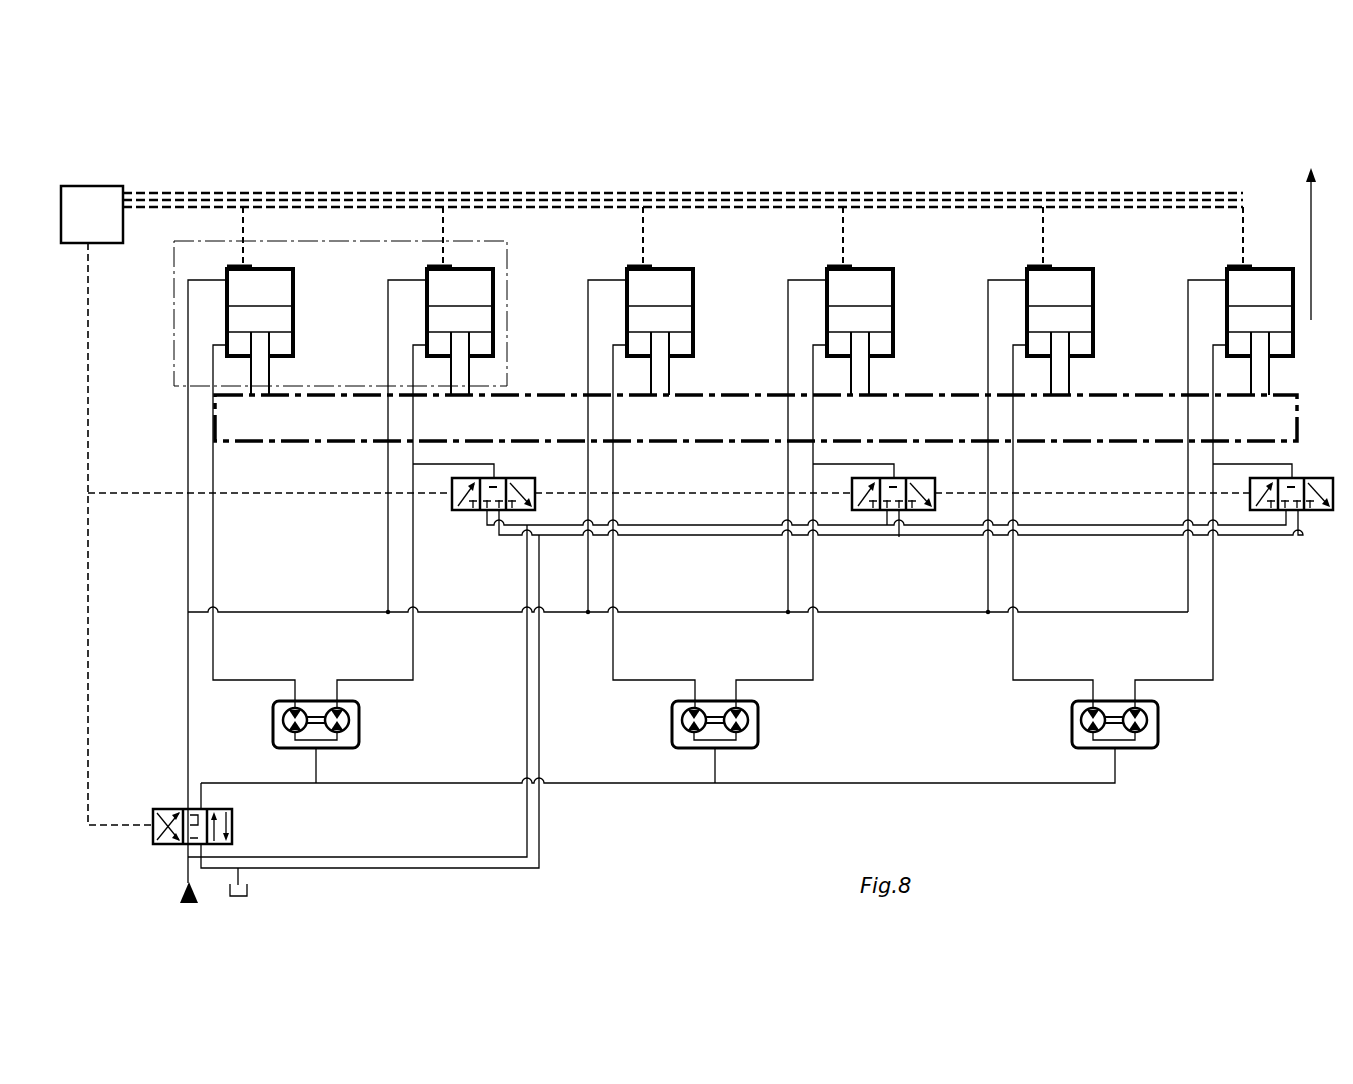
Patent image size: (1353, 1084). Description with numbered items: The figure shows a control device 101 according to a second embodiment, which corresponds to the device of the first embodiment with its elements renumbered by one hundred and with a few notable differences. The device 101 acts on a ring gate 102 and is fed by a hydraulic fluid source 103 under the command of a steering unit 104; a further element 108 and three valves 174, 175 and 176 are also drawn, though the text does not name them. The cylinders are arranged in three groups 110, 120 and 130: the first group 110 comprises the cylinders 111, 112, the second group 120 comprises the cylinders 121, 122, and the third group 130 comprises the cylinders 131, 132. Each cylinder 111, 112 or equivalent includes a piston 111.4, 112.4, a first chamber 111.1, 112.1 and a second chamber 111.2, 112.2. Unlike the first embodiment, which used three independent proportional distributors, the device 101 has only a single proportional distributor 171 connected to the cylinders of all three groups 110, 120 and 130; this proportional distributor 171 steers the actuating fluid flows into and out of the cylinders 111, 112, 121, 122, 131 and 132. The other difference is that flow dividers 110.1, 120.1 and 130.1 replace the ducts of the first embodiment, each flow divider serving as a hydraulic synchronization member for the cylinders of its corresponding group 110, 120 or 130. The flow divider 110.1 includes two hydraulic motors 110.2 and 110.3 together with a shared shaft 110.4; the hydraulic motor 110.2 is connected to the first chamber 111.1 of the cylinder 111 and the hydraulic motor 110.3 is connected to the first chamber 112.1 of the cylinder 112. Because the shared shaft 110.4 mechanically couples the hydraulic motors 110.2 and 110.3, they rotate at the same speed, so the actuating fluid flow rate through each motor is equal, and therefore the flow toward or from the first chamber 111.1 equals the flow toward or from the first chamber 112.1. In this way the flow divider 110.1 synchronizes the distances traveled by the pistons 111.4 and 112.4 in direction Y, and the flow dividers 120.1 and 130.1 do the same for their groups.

The device 101 is at (704, 510).
The ring gate 102 is at (1308, 412).
The hydraulic fluid source 103 is at (186, 909).
The steering unit 104 is at (655, 505).
The pressure relief drain 108 is at (249, 891).
The group 110 is at (427, 116).
The cylinder 111 is at (270, 245).
The cylinder 112 is at (431, 245).
The first chamber 111.1 is at (222, 356).
The second chamber 111.2 is at (234, 290).
The piston 111.4 is at (247, 316).
The first chamber 112.1 is at (422, 358).
The second chamber 112.2 is at (447, 296).
The piston 112.4 is at (445, 319).
The flow divider 110.1 is at (330, 704).
The hydraulic motor 110.2 is at (283, 722).
The hydraulic motor 110.3 is at (346, 706).
The shared shaft 110.4 is at (317, 700).
The group 120 is at (825, 120).
The cylinder 121 is at (670, 245).
The cylinder 122 is at (830, 245).
The flow divider 120.1 is at (759, 725).
The group 130 is at (1227, 125).
The cylinder 131 is at (1072, 246).
The cylinder 132 is at (1231, 246).
The flow divider 130.1 is at (1158, 725).
The proportional distributor 171 is at (272, 832).
The directional control valve 174 is at (516, 502).
The directional control valve 175 is at (916, 502).
The directional control valve 176 is at (1299, 506).